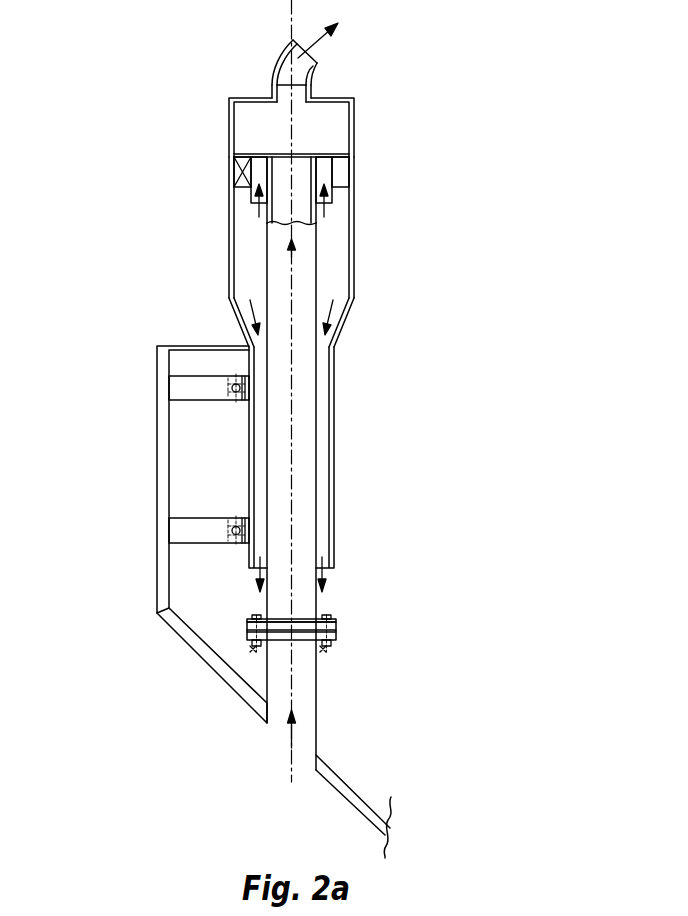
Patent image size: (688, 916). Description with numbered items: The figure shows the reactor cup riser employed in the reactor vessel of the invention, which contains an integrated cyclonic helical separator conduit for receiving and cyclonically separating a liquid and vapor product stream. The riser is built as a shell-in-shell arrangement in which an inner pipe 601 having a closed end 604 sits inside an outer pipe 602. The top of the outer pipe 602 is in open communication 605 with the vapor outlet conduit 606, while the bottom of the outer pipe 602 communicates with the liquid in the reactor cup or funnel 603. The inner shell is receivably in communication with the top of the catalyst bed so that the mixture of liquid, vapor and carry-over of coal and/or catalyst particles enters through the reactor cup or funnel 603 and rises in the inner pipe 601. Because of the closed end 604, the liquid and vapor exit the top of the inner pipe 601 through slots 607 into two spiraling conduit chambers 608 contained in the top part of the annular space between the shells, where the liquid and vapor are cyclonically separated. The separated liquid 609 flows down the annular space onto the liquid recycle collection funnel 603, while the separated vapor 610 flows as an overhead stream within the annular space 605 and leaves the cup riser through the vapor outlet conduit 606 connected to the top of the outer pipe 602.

The shell-in-shell inner pipe 601 is at (315, 447).
The outer pipe 602 is at (333, 498).
The reactor cup or funnel 603 is at (155, 458).
The closed end 604 is at (303, 154).
The open communication 605 is at (260, 154).
The vapor outlet conduit 606 is at (283, 54).
The slots 607 is at (317, 177).
The spiraling conduit chambers 608 is at (246, 178).
The separated liquid 609 is at (340, 308).
The separated vapor 610 is at (344, 232).